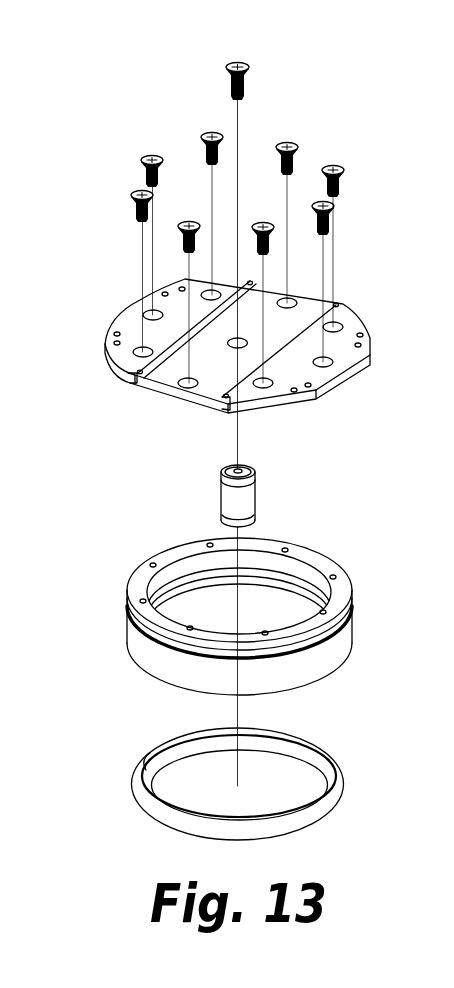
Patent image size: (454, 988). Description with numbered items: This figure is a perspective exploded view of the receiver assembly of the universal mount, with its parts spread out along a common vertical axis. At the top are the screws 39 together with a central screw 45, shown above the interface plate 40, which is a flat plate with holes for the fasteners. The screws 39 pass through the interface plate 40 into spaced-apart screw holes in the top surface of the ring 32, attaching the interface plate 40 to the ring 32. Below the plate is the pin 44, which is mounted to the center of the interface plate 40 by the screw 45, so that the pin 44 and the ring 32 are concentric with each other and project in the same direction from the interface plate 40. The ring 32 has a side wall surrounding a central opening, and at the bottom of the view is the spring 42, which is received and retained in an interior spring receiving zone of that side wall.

The screws 39 is at (208, 134).
The screw 45 is at (244, 82).
The interface plate 40 is at (127, 324).
The pin 44 is at (220, 493).
The ring 32 is at (132, 588).
The spring 42 is at (148, 760).